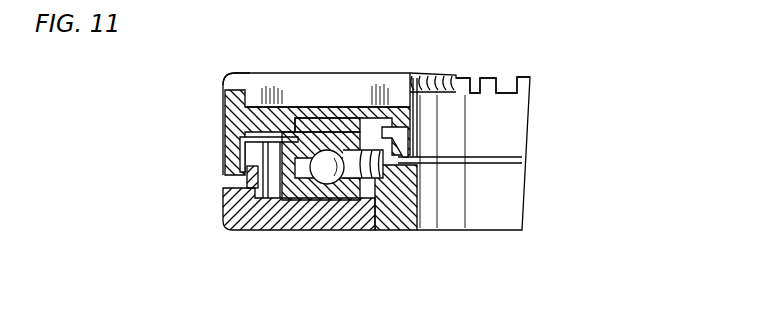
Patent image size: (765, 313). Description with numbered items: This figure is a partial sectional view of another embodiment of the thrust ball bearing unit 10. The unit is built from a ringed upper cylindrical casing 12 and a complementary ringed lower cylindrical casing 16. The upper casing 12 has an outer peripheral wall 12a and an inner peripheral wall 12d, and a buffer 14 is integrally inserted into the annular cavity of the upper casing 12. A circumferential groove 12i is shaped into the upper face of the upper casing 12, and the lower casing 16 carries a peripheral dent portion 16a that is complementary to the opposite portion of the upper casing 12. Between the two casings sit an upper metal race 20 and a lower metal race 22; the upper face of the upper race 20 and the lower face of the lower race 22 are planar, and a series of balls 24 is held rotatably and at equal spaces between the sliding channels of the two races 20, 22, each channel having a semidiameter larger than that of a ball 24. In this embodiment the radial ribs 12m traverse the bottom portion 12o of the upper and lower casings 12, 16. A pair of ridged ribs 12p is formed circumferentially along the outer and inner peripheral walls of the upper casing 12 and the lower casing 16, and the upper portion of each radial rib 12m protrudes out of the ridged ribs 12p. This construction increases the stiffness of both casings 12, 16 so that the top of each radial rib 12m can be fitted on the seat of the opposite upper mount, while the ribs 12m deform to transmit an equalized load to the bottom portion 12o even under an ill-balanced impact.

The thrust ball bearing unit 10 is at (553, 72).
The ringed upper cylindrical casing 12 is at (214, 97).
The bottom portion of the casing 12o is at (265, 73).
The circumferential groove 12i is at (338, 87).
The ridged ribs 12p is at (428, 122).
The inner peripheral wall 12d is at (453, 83).
The radial ribs 12m is at (505, 90).
The outer peripheral wall 12a is at (240, 137).
The buffer 14 is at (310, 120).
The ringed lower cylindrical casing 16 is at (214, 227).
The peripheral dent portion 16a is at (248, 188).
The upper metal race 20 is at (280, 203).
The lower metal race 22 is at (362, 203).
The ball 24 is at (325, 185).